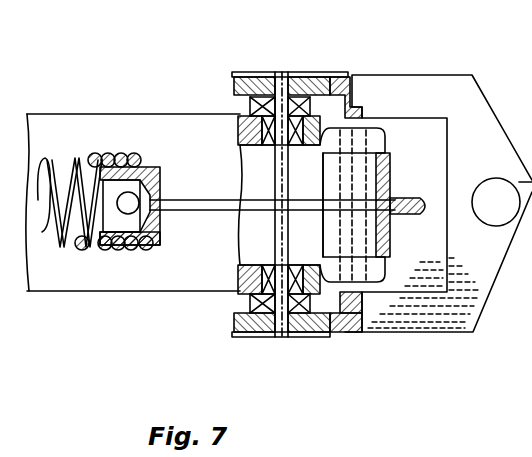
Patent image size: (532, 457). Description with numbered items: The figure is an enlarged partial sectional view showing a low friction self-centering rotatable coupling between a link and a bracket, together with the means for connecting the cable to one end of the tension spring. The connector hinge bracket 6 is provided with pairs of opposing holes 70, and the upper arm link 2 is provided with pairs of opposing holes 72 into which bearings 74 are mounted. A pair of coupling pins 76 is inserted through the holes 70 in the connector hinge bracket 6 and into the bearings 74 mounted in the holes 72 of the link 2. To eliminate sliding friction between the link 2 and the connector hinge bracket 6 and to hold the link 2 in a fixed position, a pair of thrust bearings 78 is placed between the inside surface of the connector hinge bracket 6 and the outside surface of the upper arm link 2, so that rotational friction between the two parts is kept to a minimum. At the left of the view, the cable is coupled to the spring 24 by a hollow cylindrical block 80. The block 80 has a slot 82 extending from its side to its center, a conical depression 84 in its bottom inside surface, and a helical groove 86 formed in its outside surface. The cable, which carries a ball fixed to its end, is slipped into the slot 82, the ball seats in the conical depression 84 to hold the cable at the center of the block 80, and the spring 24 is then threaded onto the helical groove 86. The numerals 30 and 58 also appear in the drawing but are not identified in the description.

The upper arm link 2 is at (110, 290).
The connector hinge bracket 6 is at (445, 322).
The spring 24 is at (50, 152).
The shaft 30 is at (386, 180).
The plate portion 58 is at (521, 269).
The holes 70 is at (340, 85).
The holes 72 is at (330, 128).
The bearings 74 is at (270, 122).
The coupling pins 76 is at (283, 72).
The thrust bearings 78 is at (338, 318).
The hollow cylindrical block 80 is at (156, 166).
The slot 82 is at (92, 258).
The conical depression 84 is at (144, 250).
The helical groove 86 is at (128, 157).